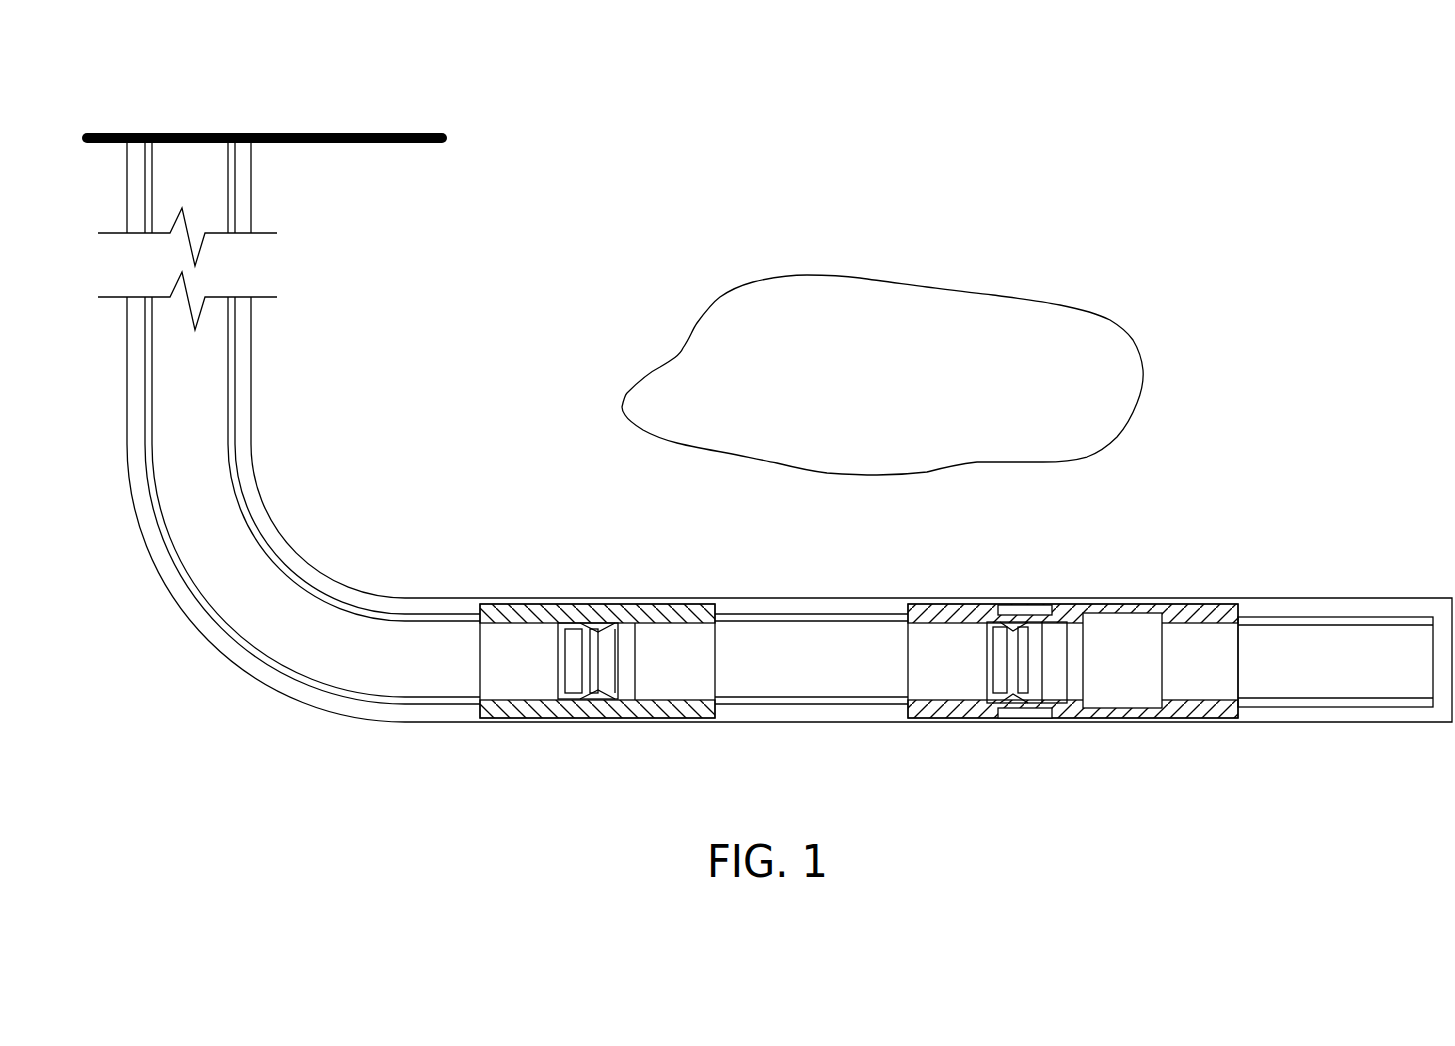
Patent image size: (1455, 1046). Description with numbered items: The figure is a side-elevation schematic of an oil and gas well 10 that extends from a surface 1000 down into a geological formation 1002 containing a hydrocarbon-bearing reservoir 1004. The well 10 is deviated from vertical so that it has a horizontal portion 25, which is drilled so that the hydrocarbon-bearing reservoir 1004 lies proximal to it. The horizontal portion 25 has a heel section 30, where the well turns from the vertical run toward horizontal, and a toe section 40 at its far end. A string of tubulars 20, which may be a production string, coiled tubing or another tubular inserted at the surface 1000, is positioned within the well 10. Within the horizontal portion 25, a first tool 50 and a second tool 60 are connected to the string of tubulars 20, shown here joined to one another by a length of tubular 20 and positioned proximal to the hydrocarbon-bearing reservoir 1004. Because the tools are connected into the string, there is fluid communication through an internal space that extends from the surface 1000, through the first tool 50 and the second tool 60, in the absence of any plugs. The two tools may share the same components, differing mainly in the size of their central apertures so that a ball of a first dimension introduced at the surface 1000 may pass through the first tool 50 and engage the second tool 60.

The surface 1000 is at (288, 133).
The oil and gas well 10 is at (251, 368).
The string of tubulars 20 is at (234, 455).
The heel section 30 is at (358, 590).
The horizontal portion 25 is at (862, 745).
The first tool 50 is at (634, 622).
The second tool 60 is at (1118, 610).
The toe section 40 is at (1452, 600).
The geological formation 1002 is at (555, 313).
The hydrocarbon-bearing reservoir 1004 is at (920, 390).